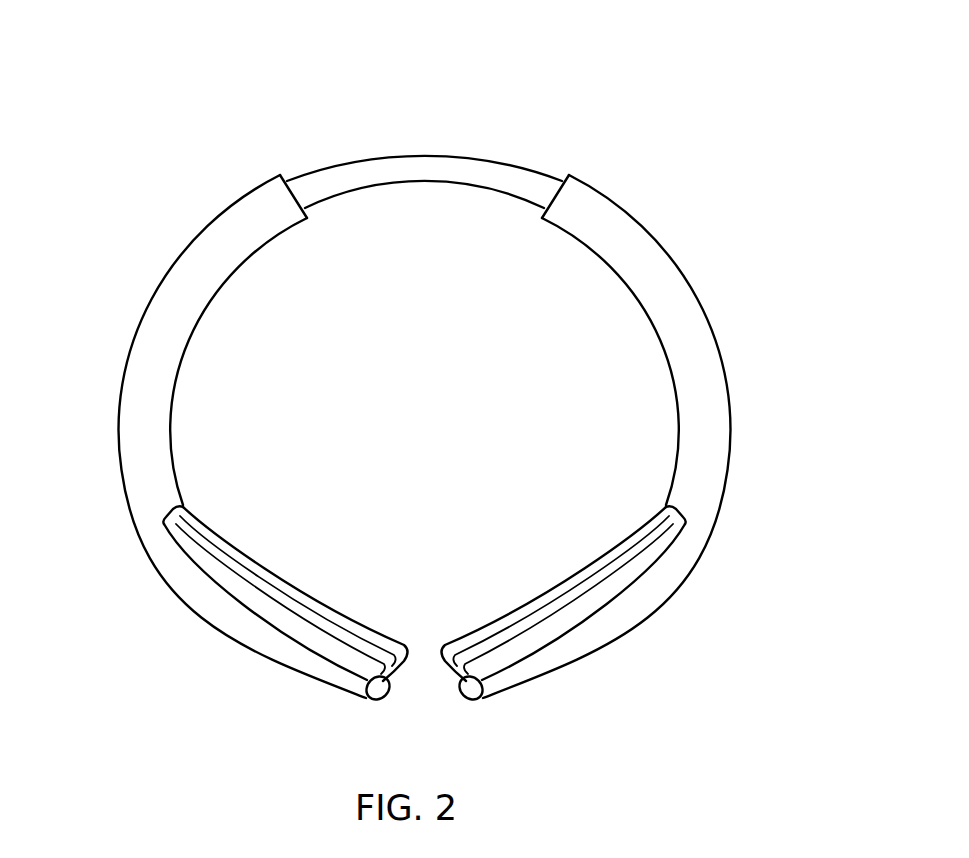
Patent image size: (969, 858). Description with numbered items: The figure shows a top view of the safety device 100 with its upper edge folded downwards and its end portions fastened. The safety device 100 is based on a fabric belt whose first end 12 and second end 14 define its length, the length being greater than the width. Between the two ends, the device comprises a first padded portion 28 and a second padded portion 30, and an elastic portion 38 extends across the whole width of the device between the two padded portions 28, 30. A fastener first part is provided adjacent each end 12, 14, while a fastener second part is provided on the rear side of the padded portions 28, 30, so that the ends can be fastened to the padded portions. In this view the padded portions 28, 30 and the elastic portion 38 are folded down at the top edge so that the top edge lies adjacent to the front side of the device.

The safety device 100 is at (692, 102).
The elastic portion 38 is at (420, 162).
The first padded portion 28 is at (127, 432).
The second padded portion 30 is at (732, 440).
The first end 12 is at (312, 616).
The second end 14 is at (552, 606).